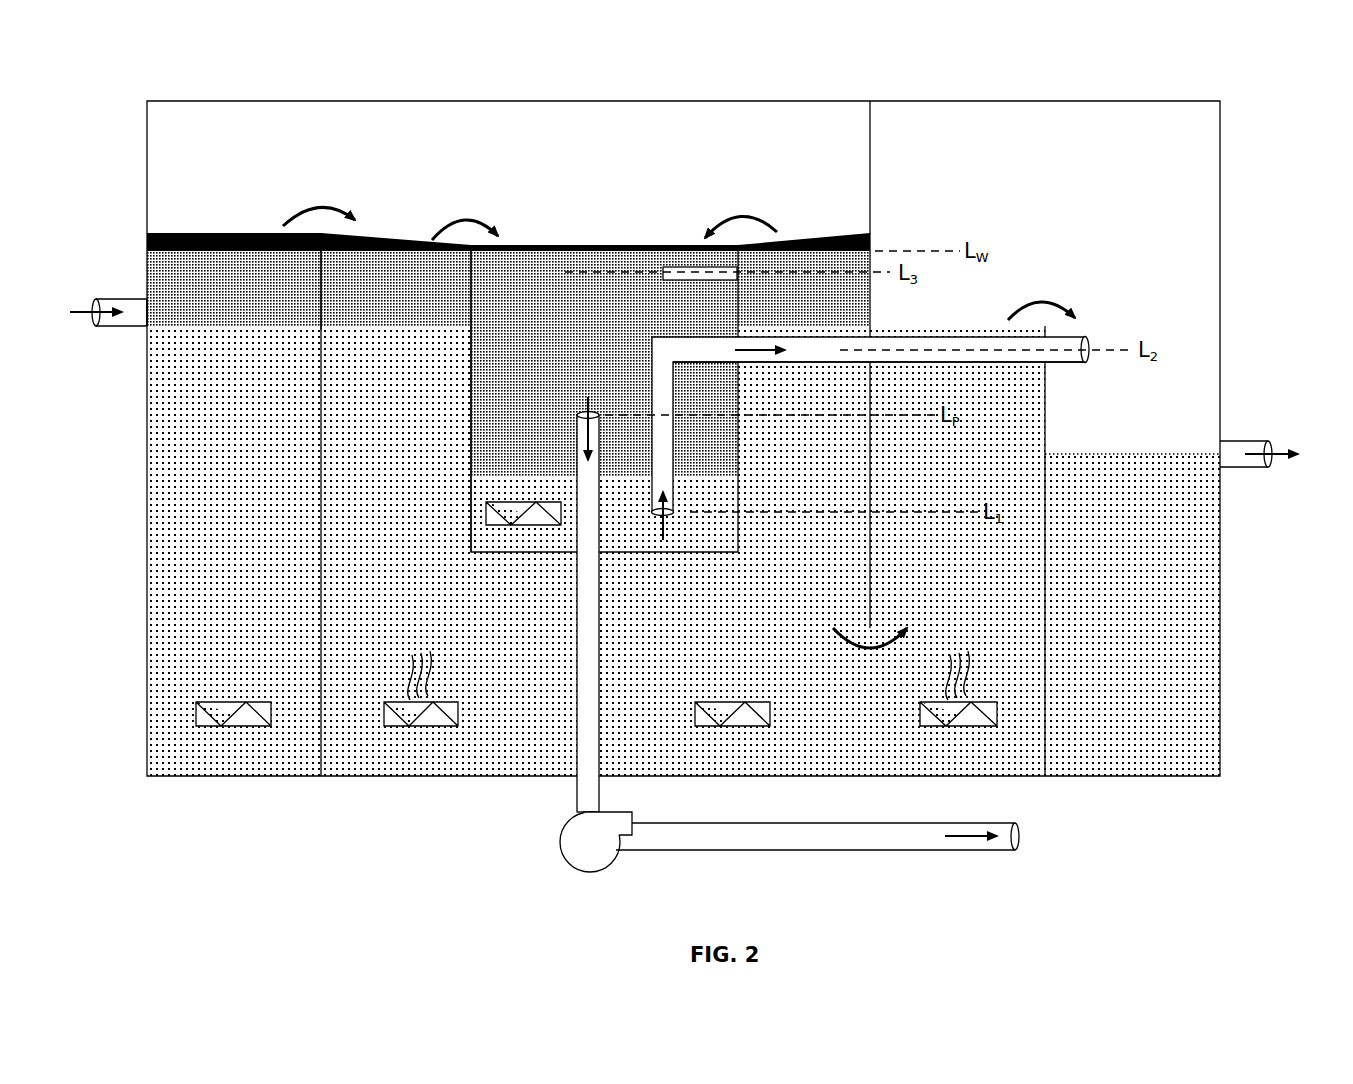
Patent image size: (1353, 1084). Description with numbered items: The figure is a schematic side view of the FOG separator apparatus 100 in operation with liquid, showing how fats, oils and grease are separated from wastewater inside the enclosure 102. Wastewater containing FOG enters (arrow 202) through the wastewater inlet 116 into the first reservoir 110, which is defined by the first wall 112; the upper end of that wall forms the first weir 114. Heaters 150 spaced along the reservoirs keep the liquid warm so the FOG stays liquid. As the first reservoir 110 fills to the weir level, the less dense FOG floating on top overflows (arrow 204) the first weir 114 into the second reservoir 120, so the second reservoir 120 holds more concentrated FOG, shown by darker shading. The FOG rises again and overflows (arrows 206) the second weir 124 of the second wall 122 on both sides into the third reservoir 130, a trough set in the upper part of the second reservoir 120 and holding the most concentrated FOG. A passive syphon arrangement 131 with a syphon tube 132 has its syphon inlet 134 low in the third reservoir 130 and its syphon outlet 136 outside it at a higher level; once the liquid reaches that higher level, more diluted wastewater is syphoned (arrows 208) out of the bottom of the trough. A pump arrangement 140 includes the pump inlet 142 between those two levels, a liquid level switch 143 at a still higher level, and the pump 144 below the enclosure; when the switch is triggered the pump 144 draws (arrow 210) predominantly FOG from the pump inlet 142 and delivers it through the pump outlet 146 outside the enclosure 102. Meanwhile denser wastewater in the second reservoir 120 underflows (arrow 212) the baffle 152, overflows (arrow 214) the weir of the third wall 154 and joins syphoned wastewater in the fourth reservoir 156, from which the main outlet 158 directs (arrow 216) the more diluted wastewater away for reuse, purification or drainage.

The FOG separator apparatus 100 is at (1298, 97).
The enclosure 102 is at (1120, 100).
The first reservoir 110 is at (248, 451).
The first wall 112 is at (323, 350).
The first weir 114 is at (323, 257).
The wastewater inlet 116 is at (122, 298).
The second reservoir 120 is at (410, 451).
The second wall 122 is at (473, 351).
The second weir 124 is at (473, 262).
The third reservoir 130 is at (535, 449).
The syphon arrangement 131 is at (802, 367).
The syphon tube 132 is at (797, 336).
The syphon inlet 134 is at (678, 500).
The syphon outlet 136 is at (1084, 336).
The pump arrangement 140 is at (624, 602).
The pump inlet 142 is at (582, 410).
The liquid level switch 143 is at (677, 266).
The pump 144 is at (560, 841).
The pump outlet 146 is at (1020, 840).
The heaters 150 is at (222, 700).
The baffle 152 is at (872, 573).
The third wall 154 is at (1047, 562).
The fourth reservoir 156 is at (1145, 621).
The main outlet 158 is at (1268, 440).
The filling flow 202 is at (84, 308).
The first weir overflow 204 is at (318, 208).
The second weir overflow 206 is at (466, 216).
The syphon flow 208 is at (756, 352).
The pumped flow 210 is at (592, 404).
The baffle underflow 212 is at (870, 648).
The third weir overflow 214 is at (1038, 300).
The outlet flow 216 is at (1278, 468).